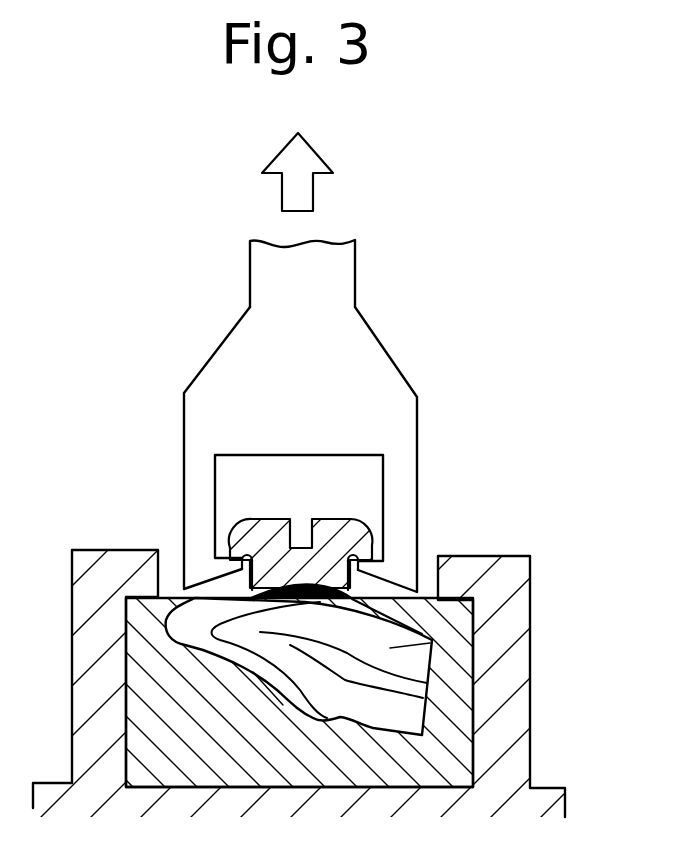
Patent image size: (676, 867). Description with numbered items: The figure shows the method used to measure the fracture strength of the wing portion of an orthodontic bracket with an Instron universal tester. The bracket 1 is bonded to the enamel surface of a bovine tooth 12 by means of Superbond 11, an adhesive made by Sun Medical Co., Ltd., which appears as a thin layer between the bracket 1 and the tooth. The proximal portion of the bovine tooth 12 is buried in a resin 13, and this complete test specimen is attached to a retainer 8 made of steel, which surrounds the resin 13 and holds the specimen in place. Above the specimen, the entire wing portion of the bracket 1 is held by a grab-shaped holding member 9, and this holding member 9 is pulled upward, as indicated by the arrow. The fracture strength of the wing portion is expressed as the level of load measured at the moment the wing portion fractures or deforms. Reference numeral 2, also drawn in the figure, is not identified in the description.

The bracket 1 is at (340, 566).
The adhesive layer 2 is at (380, 583).
The retainer 8 is at (497, 687).
The holding member 9 is at (398, 432).
The Superbond 11 is at (277, 577).
The bovine tooth 12 is at (425, 644).
The resin 13 is at (460, 757).